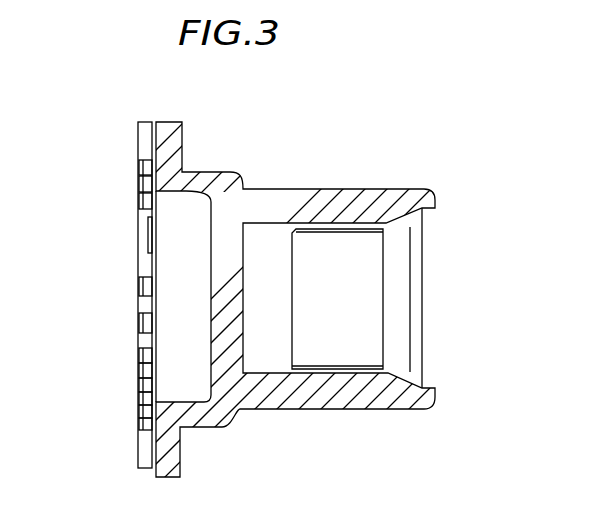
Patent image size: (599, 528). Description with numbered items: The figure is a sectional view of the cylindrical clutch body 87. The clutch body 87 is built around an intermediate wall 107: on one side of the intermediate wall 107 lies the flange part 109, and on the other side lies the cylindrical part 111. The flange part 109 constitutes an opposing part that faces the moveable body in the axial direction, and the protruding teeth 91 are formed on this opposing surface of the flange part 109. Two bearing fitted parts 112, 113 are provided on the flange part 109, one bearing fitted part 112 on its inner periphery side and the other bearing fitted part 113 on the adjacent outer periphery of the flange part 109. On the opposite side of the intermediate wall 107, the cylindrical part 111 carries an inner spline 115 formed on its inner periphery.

The cylindrical clutch body 87 is at (400, 189).
The protruding teeth 91 is at (138, 351).
The intermediate wall 107 is at (222, 327).
The flange part 109 is at (168, 122).
The cylindrical part 111 is at (352, 199).
The bearing fitted part 112 is at (181, 197).
The bearing fitted part 113 is at (201, 172).
The inner spline 115 is at (332, 230).